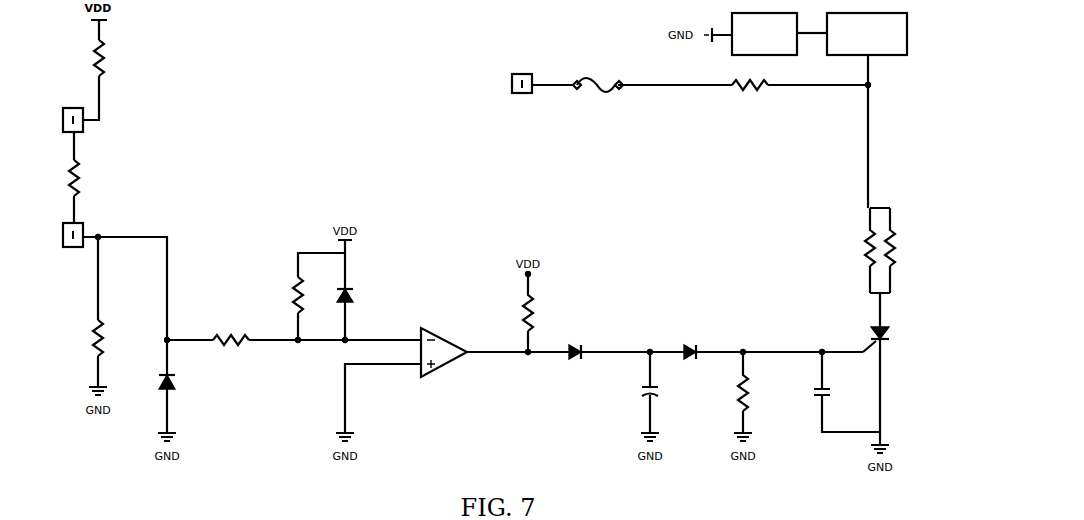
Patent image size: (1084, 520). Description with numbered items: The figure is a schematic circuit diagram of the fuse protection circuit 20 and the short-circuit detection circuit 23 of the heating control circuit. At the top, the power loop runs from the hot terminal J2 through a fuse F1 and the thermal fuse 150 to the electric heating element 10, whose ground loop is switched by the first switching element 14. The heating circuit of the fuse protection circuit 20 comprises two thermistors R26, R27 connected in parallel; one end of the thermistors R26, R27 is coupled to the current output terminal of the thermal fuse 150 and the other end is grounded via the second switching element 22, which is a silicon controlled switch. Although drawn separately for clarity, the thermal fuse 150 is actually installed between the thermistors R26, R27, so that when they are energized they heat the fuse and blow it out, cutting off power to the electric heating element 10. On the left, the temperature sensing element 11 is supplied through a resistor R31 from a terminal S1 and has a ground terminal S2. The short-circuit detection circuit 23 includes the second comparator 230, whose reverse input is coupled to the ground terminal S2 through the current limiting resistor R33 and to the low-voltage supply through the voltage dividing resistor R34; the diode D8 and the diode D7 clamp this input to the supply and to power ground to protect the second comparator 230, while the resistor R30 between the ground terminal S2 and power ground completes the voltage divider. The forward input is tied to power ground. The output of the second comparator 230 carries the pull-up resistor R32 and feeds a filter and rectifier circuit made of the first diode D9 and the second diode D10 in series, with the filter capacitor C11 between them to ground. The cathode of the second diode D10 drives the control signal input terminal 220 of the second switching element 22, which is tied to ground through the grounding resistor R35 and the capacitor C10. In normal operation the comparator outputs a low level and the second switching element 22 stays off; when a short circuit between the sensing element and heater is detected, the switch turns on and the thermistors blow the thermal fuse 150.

The resistor R31 is at (108, 63).
The switch S1 is at (73, 112).
The temperature sensing element 11 is at (81, 184).
The ground terminal S2 is at (73, 245).
The resistor R30 is at (92, 333).
The diode D7 is at (177, 385).
The current limiting resistor R33 is at (229, 336).
The voltage dividing resistor R34 is at (293, 298).
The diode D8 is at (358, 294).
The second comparator 230 is at (446, 336).
The short-circuit detection circuit 23 is at (520, 393).
The pull-up resistor R32 is at (539, 302).
The first diode D9 is at (590, 330).
The filter capacitor C11 is at (639, 395).
The second diode D10 is at (695, 334).
The grounding resistor R35 is at (738, 393).
The capacitor C10 is at (818, 402).
The second switching element 22 is at (893, 341).
The control signal input terminal 220 is at (862, 348).
The fuse protection circuit 20 is at (910, 302).
The thermistor R26 is at (862, 244).
The thermistor R27 is at (900, 241).
The hot terminal connector J2 is at (521, 84).
The fuse F1 is at (598, 96).
The thermal fuse 150 is at (752, 96).
The first switching element 14 is at (790, 12).
The electric heating element 10 is at (910, 42).